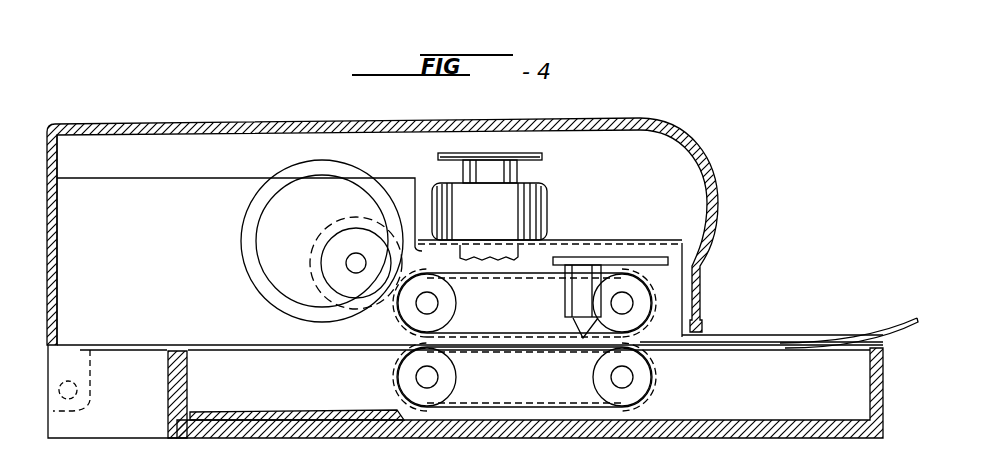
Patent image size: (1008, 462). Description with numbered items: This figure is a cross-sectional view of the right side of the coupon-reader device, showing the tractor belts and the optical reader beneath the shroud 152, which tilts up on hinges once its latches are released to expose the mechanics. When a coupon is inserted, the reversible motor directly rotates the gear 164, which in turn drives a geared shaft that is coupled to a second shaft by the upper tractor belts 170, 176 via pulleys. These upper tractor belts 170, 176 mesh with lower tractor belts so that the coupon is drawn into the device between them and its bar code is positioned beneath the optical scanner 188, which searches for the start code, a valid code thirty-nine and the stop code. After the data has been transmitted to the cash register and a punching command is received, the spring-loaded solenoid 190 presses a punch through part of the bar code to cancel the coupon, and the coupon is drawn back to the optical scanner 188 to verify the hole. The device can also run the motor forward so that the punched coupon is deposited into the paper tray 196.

The shroud 152 is at (638, 120).
The gear 164 is at (311, 263).
The upper tractor belt 170 is at (538, 263).
The upper tractor belt 176 is at (605, 410).
The optical scanner 188 is at (565, 301).
The solenoid 190 is at (543, 184).
The paper tray 196 is at (336, 410).